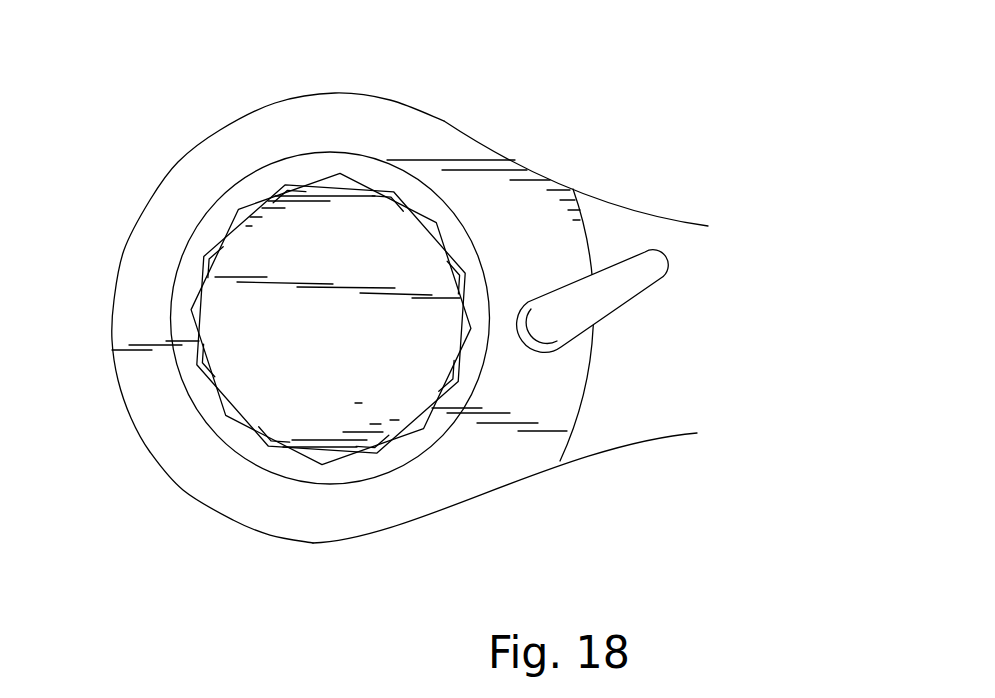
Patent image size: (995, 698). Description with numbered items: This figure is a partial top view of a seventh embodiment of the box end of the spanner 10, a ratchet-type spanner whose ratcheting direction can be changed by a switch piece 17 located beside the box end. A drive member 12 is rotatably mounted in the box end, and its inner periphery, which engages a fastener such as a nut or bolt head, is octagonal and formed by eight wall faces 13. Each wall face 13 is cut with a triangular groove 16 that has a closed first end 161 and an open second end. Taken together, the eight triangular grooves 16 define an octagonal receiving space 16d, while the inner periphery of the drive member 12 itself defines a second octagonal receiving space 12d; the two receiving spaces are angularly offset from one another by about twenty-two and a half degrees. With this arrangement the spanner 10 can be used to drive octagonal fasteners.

The spanner 10 is at (493, 500).
The drive member 12 is at (378, 175).
The octagonal receiving space 12d is at (365, 452).
The wall face 13 is at (233, 232).
The triangular groove 16 is at (265, 196).
The octagonal receiving space 16d is at (202, 315).
The closed first end 161 is at (283, 160).
The switch piece 17 is at (640, 272).